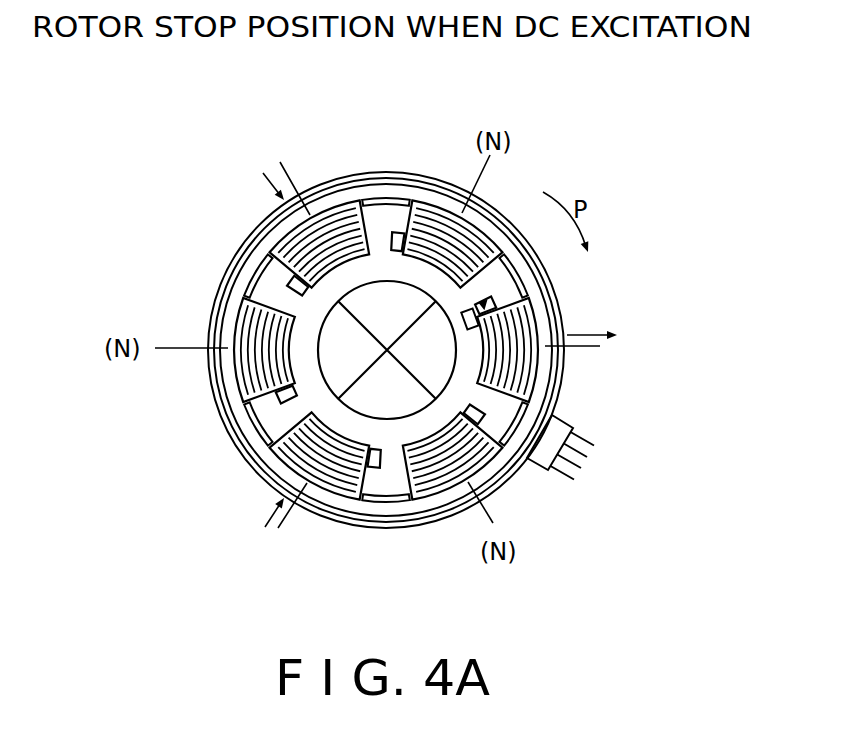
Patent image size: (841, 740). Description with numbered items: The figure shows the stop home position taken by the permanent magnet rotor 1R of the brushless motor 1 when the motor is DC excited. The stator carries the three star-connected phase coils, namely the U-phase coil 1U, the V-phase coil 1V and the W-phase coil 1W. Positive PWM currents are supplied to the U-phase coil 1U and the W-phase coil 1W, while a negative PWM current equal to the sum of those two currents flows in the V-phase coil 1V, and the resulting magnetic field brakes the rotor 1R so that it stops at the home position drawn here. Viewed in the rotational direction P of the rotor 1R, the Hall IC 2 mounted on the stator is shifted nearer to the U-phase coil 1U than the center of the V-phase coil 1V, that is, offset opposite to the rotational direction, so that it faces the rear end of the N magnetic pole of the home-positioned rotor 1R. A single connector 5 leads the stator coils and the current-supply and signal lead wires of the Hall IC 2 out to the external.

The brushless motor 1 is at (213, 289).
The rotor 1R is at (338, 370).
The U-phase coil 1U is at (345, 470).
The V-phase coil 1V is at (528, 345).
The W-phase coil 1W is at (347, 207).
The Hall IC 2 is at (483, 306).
The connector 5 is at (568, 422).